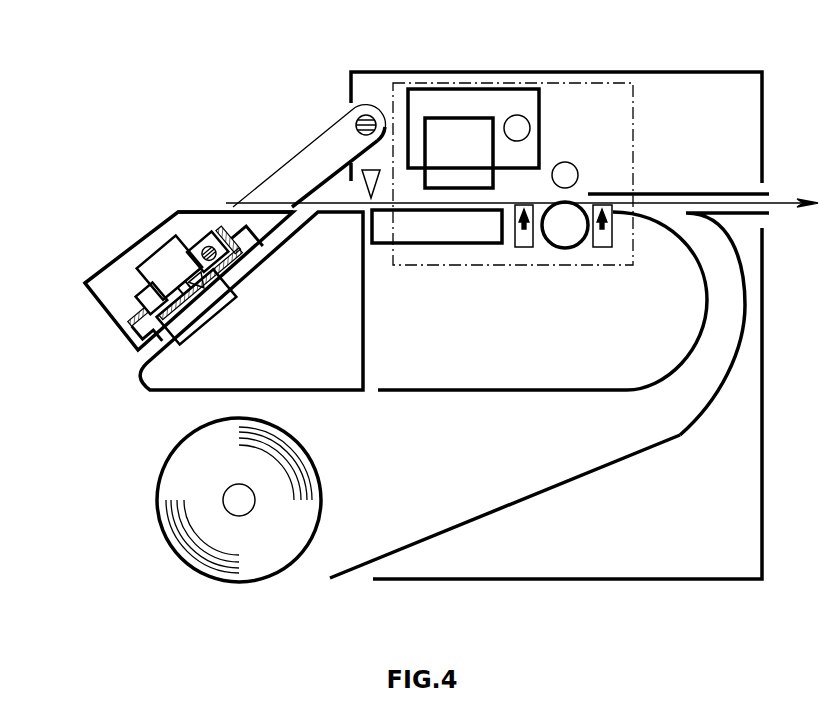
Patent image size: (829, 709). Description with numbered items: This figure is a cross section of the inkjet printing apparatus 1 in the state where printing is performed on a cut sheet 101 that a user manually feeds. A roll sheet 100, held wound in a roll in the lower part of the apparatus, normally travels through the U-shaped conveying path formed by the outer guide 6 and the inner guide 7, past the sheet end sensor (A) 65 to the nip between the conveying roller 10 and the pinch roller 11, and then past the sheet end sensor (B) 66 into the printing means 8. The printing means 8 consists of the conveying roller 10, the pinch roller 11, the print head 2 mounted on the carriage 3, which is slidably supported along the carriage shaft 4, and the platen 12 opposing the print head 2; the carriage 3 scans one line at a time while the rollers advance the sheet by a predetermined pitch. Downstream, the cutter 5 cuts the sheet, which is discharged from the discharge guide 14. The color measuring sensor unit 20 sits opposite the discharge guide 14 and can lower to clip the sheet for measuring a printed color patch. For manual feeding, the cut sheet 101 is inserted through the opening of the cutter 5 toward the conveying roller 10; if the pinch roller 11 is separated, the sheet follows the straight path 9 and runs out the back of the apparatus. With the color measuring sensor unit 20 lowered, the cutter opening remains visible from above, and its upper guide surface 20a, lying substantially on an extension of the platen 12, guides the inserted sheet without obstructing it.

The inkjet printing apparatus 1 is at (658, 578).
The print head 2 is at (460, 135).
The carriage 3 is at (442, 103).
The carriage shaft 4 is at (517, 125).
The cutter 5 is at (357, 193).
The outer guide 6 is at (727, 390).
The inner guide 7 is at (707, 335).
The printing means 8 is at (423, 268).
The straight path 9 is at (688, 194).
The conveying roller 10 is at (565, 249).
The pinch roller 11 is at (570, 162).
The platen 12 is at (470, 230).
The discharge guide 14 is at (268, 255).
The color measuring sensor unit 20 is at (108, 262).
The guide surface 20a is at (200, 208).
The sheet end sensor (A) 65 is at (602, 248).
The sheet end sensor (B) 66 is at (523, 248).
The roll sheet 100 is at (180, 553).
The cut sheet 101 is at (268, 202).